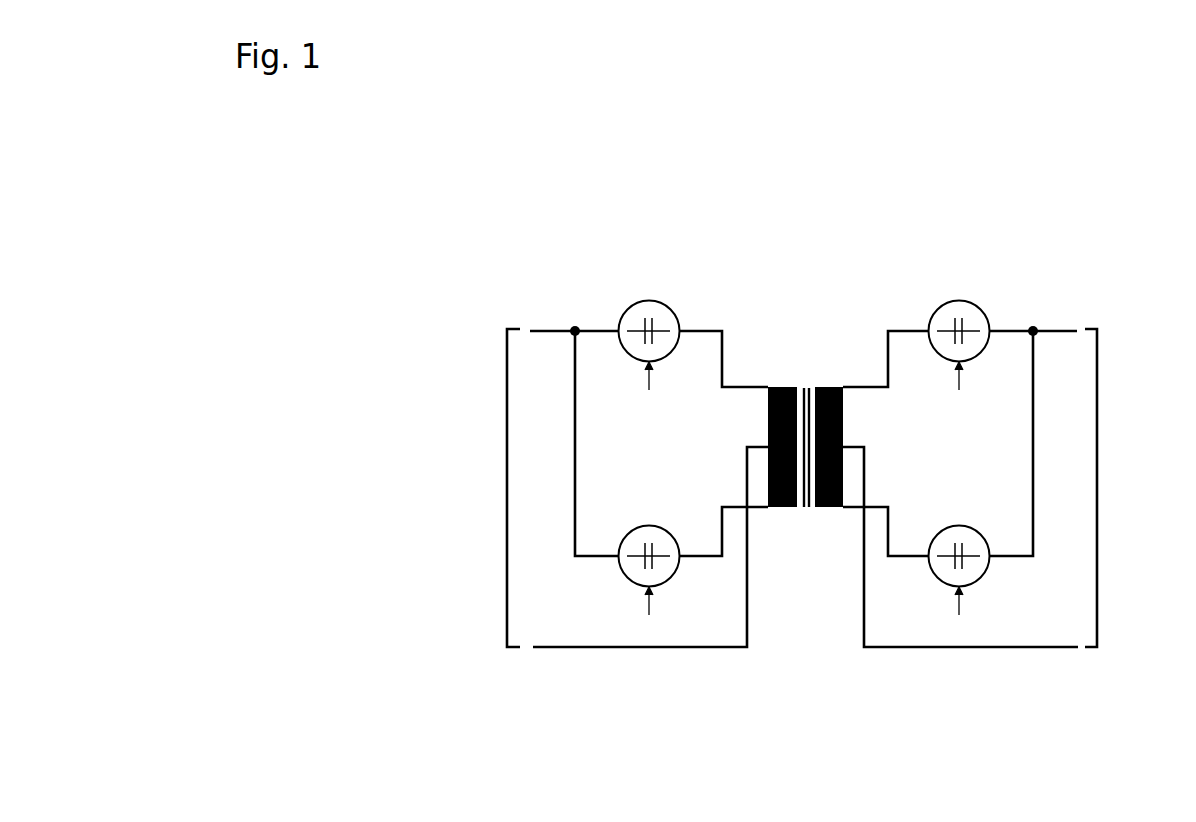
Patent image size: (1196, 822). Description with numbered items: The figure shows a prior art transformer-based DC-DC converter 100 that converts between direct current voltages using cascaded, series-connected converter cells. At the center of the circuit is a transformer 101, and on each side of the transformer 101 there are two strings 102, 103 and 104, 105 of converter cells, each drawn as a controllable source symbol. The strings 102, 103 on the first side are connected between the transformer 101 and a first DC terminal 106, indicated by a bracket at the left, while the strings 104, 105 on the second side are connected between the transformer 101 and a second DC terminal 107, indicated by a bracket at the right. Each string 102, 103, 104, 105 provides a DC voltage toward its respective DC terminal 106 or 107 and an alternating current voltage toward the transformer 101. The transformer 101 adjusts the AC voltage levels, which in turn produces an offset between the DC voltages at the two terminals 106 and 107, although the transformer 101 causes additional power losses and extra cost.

The converter 100 is at (467, 755).
The transformer 101 is at (805, 419).
The string of converter cells 102 is at (649, 324).
The string of converter cells 103 is at (649, 549).
The string of converter cells 104 is at (959, 324).
The string of converter cells 105 is at (959, 549).
The DC terminal 106 is at (507, 489).
The DC terminal 107 is at (1097, 489).